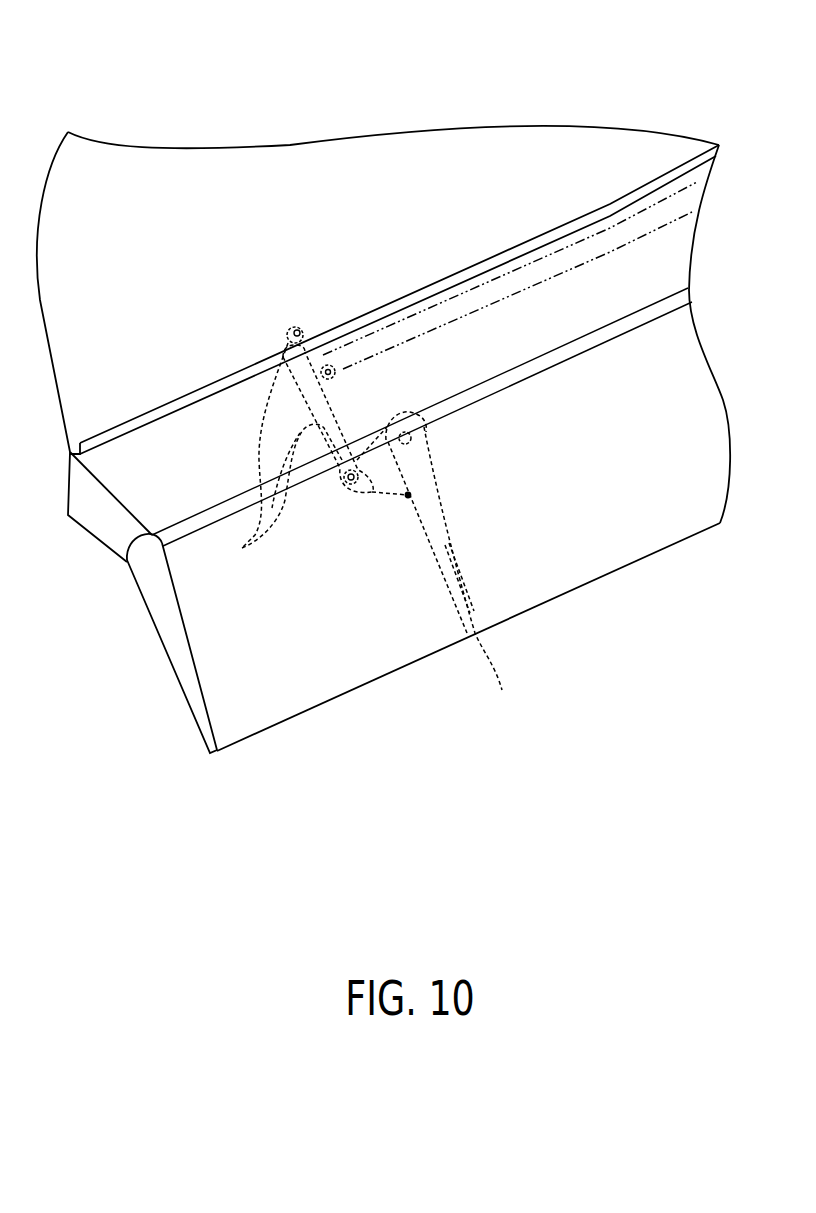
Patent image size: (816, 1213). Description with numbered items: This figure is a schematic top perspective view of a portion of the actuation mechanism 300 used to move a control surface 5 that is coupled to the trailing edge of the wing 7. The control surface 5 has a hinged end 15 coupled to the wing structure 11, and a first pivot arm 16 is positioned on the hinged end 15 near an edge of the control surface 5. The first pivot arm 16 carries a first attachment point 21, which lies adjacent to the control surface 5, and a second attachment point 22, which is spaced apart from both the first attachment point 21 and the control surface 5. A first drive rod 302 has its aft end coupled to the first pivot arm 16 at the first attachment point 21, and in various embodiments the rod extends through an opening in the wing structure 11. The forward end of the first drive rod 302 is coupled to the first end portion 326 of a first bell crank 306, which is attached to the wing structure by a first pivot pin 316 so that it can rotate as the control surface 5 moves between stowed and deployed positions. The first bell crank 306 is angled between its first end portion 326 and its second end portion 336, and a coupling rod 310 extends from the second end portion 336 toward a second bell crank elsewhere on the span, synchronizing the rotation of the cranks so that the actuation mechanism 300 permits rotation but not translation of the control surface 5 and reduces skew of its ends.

The control surface 5 is at (637, 528).
The wing 7 is at (160, 180).
The wing structure 11 is at (657, 184).
The hinged end 15 is at (555, 378).
The first pivot arm 16 is at (452, 575).
The first attachment point 21 is at (338, 500).
The second attachment point 22 is at (435, 432).
The actuation mechanism 300 is at (233, 408).
The first drive rod 302 is at (271, 454).
The first bell crank 306 is at (287, 347).
The coupling rod 310 is at (605, 250).
The first pivot pin 316 is at (328, 421).
The first end portion 326 is at (289, 317).
The second end portion 336 is at (356, 380).